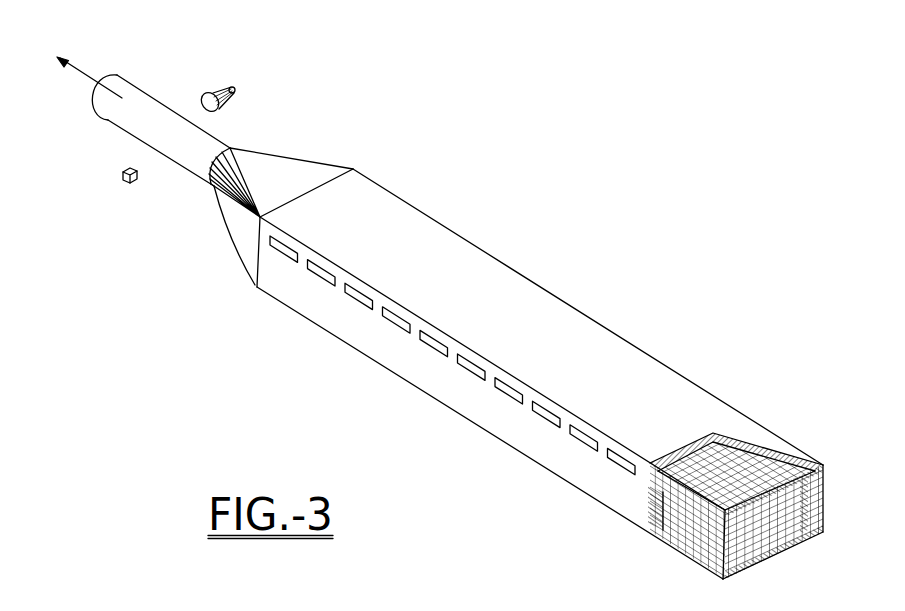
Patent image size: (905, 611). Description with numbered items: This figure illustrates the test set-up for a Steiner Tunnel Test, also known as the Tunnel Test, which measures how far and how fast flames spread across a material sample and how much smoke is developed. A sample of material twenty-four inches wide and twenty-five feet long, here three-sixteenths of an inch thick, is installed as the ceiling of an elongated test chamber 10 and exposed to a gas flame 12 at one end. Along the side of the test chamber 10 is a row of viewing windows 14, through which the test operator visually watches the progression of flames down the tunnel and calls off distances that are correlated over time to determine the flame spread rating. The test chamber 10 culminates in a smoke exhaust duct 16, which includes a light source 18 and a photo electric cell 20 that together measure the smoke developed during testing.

The test chamber 10 is at (431, 210).
The gas flame 12 is at (778, 535).
The viewing windows 14 is at (352, 297).
The smoke exhaust duct 16 is at (140, 87).
The light source 18 is at (235, 88).
The photo electric cell 20 is at (124, 181).